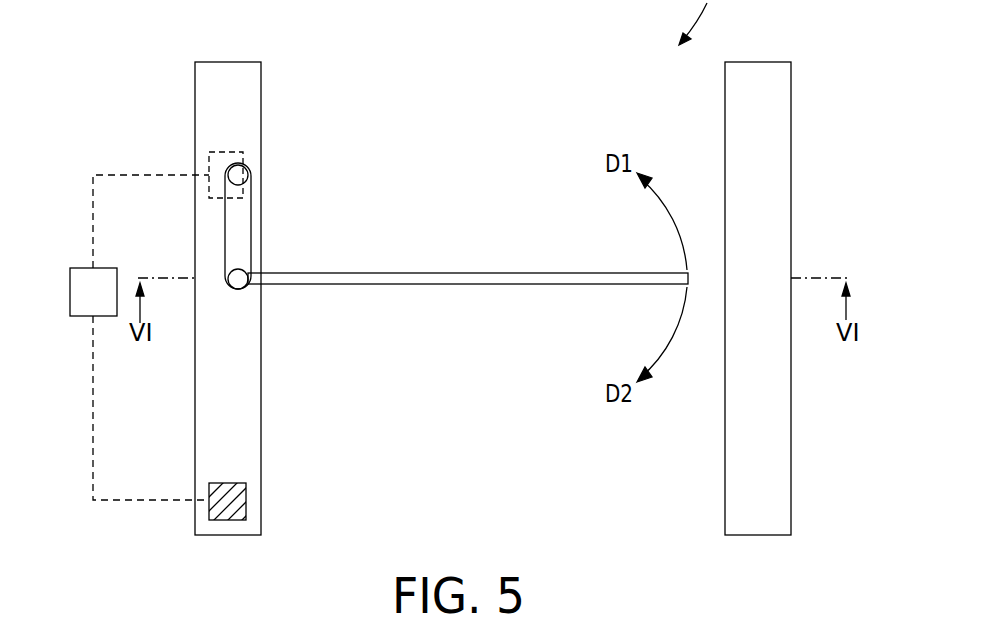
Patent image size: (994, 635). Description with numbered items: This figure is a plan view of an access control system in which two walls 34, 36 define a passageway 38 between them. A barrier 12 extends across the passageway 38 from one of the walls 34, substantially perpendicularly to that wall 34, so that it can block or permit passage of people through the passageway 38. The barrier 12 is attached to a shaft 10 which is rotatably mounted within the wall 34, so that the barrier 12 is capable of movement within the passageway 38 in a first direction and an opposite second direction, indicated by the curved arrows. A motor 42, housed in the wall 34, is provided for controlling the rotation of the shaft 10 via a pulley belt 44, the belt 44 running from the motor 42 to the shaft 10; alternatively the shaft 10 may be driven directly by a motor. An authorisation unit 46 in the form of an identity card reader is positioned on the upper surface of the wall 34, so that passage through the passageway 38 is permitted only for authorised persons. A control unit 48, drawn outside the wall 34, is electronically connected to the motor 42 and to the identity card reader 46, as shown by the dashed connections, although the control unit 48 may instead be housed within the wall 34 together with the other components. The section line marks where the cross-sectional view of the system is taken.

The shaft 10 is at (240, 289).
The barrier 12 is at (467, 272).
The wall 34 is at (207, 101).
The wall 36 is at (776, 145).
The passageway 38 is at (476, 390).
The motor 42 is at (241, 151).
The pulley belt 44 is at (251, 216).
The authorisation unit 46 is at (246, 500).
The control unit 48 is at (78, 295).